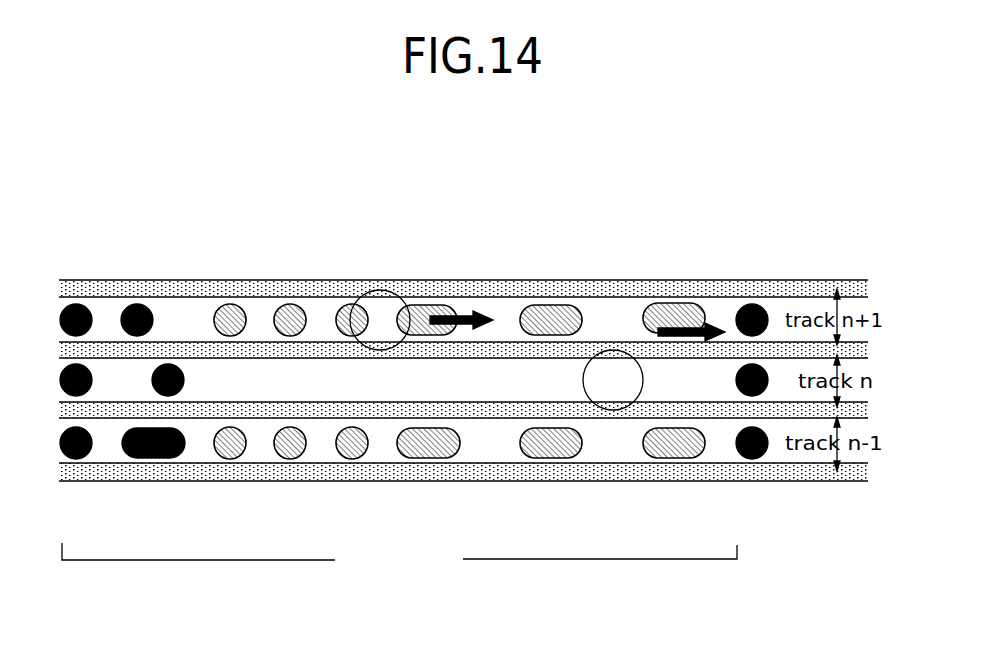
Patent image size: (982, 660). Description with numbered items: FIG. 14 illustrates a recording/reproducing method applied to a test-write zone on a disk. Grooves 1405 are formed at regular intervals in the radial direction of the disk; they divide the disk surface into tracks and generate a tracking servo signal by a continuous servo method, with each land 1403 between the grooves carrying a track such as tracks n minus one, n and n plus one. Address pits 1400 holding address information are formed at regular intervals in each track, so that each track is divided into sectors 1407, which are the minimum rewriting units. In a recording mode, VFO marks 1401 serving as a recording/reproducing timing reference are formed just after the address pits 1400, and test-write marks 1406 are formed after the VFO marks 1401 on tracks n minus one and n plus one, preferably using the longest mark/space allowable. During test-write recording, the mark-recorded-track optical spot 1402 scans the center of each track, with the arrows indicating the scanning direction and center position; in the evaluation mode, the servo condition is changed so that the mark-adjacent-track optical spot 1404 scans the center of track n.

The address pit 1400 is at (755, 300).
The VFO mark 1401 is at (227, 301).
The mark-recorded-track optical spot 1402 is at (382, 300).
The land 1403 is at (505, 322).
The mark-adjacent-track optical spot 1404 is at (612, 380).
The groove 1405 is at (502, 417).
The test-write mark 1406 is at (675, 440).
The sector 1407 is at (399, 558).